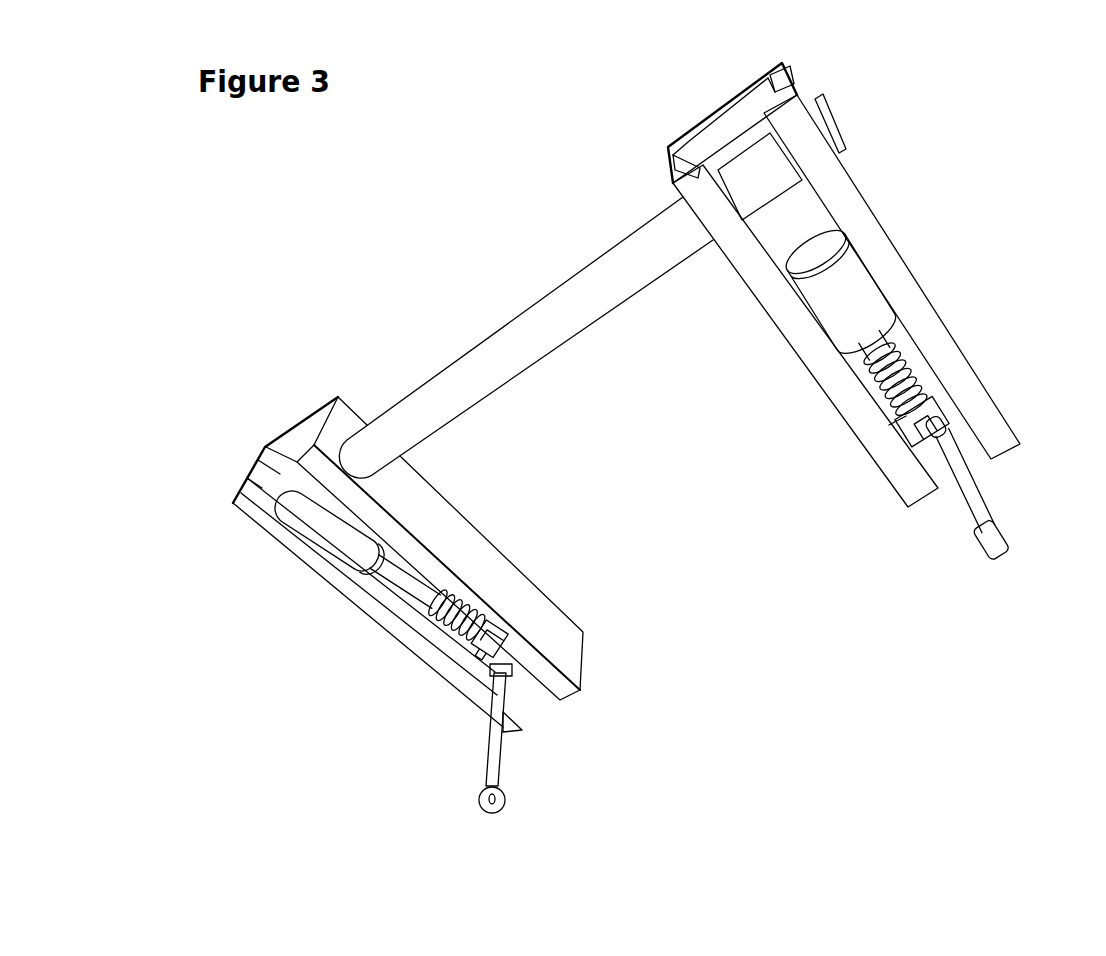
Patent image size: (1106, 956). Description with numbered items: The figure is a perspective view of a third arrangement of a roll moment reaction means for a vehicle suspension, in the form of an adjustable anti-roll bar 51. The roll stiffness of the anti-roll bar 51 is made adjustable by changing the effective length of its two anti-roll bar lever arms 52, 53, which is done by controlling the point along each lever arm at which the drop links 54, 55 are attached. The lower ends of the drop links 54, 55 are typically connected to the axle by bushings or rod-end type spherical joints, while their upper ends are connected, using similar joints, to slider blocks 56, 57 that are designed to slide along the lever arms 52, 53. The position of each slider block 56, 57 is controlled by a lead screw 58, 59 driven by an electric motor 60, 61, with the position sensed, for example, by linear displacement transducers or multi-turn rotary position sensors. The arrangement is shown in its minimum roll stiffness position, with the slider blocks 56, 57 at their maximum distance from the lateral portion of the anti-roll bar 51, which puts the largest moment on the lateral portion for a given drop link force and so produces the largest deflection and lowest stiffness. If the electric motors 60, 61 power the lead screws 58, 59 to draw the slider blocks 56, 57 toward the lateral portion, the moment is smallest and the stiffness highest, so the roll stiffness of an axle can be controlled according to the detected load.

The anti-roll bar 51 is at (518, 333).
The anti-roll bar lever arm 52 is at (346, 592).
The anti-roll bar lever arm 53 is at (835, 188).
The drop link 54 is at (503, 752).
The drop link 55 is at (946, 498).
The slider block 56 is at (476, 660).
The slider block 57 is at (928, 386).
The lead screw 58 is at (478, 645).
The lead screw 59 is at (905, 365).
The electric motor 60 is at (394, 576).
The electric motor 61 is at (858, 298).